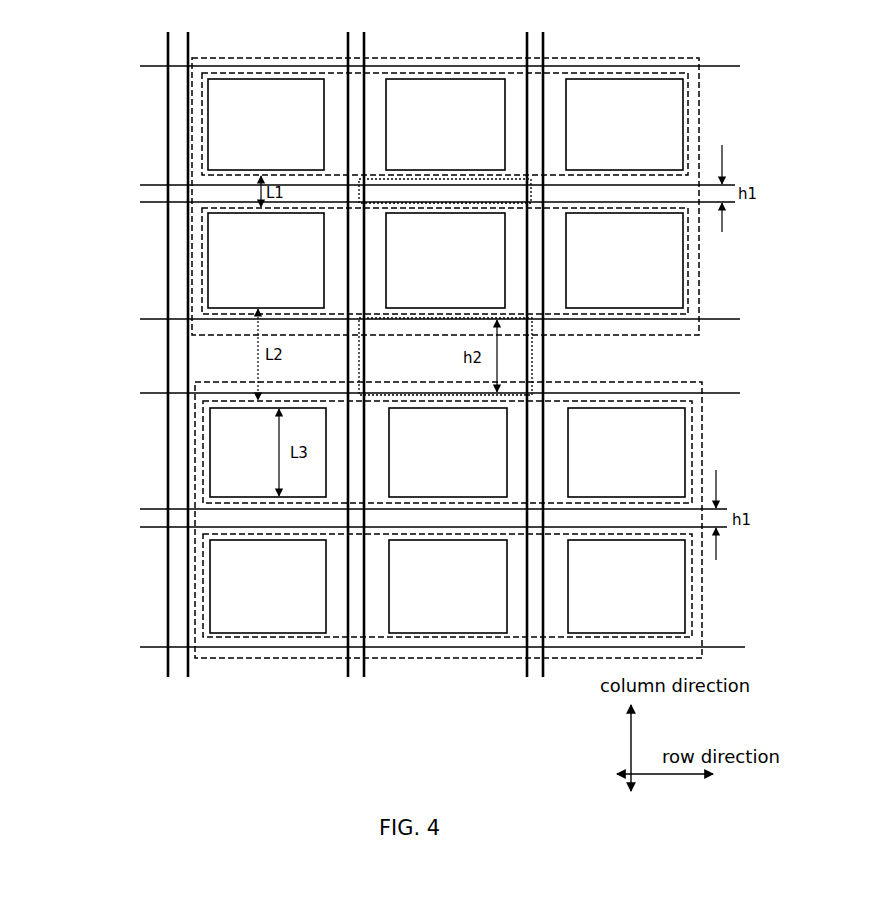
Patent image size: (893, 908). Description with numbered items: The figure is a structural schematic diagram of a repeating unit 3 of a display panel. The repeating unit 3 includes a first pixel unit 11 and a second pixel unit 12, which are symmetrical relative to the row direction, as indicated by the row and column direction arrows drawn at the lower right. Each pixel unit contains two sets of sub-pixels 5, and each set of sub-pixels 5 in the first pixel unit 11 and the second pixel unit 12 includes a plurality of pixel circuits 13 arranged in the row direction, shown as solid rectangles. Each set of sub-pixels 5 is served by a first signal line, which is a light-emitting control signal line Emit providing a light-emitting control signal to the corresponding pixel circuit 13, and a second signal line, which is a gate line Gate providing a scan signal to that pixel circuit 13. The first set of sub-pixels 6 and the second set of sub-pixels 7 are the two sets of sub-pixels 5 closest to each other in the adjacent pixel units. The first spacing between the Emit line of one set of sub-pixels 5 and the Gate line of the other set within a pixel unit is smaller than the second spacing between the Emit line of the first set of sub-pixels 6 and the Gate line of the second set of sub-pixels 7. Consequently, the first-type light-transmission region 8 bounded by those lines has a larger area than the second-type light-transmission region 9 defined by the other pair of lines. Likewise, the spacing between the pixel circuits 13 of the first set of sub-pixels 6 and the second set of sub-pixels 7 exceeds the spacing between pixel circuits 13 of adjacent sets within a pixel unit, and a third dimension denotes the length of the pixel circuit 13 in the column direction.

The repeating unit 3 is at (62, 22).
The set of sub-pixels 5 is at (688, 122).
The first set of sub-pixels 6 is at (688, 268).
The second set of sub-pixels 7 is at (694, 452).
The first-type light-transmission region 8 is at (534, 360).
The second-type light-transmission region 9 is at (533, 192).
The first pixel unit 11 is at (667, 58).
The second pixel unit 12 is at (672, 382).
The pixel circuit 13 is at (687, 620).